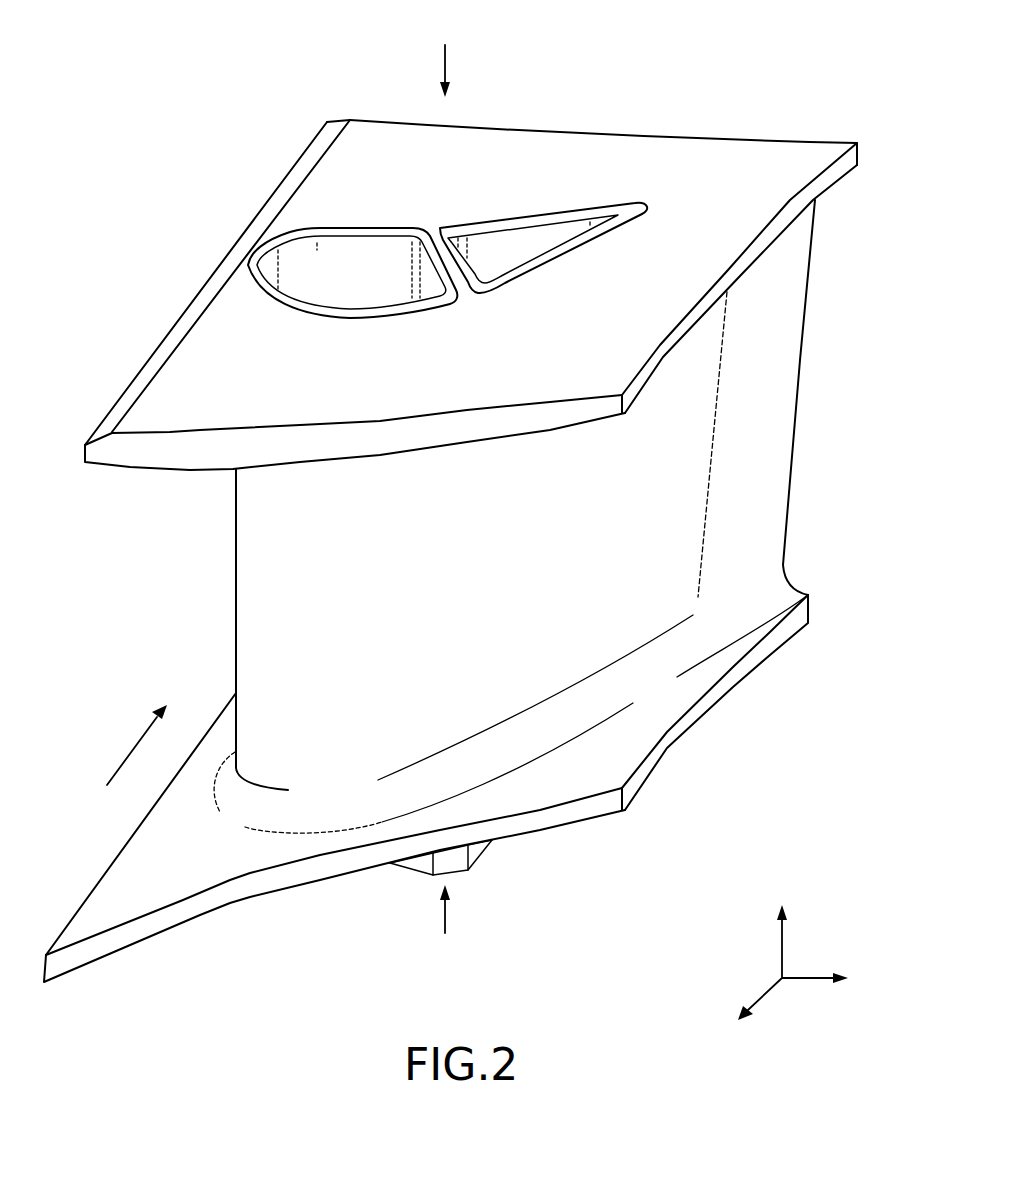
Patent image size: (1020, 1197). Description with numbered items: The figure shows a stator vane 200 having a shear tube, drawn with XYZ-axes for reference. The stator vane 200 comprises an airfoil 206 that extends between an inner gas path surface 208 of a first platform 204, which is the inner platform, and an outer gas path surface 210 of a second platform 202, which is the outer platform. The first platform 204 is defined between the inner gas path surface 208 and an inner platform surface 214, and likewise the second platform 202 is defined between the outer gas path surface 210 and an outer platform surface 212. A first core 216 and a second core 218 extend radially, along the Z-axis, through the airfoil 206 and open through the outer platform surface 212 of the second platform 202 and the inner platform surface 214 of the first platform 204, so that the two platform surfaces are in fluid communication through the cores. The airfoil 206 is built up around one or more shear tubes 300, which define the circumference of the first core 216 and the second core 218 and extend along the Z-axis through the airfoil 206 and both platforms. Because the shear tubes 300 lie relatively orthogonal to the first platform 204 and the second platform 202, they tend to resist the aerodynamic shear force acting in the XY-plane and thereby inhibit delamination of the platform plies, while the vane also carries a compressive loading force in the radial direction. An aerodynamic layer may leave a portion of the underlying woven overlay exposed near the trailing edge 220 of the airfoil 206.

The stator vane 200 is at (728, 100).
The second platform 202 is at (205, 224).
The first platform 204 is at (722, 738).
The airfoil 206 is at (495, 598).
The inner gas path surface 208 is at (120, 857).
The outer gas path surface 210 is at (145, 468).
The outer platform surface 212 is at (128, 405).
The inner platform surface 214 is at (84, 962).
The first core 216 is at (333, 290).
The second core 218 is at (485, 262).
The trailing edge 220 is at (782, 433).
The shear tube 300 is at (363, 230).